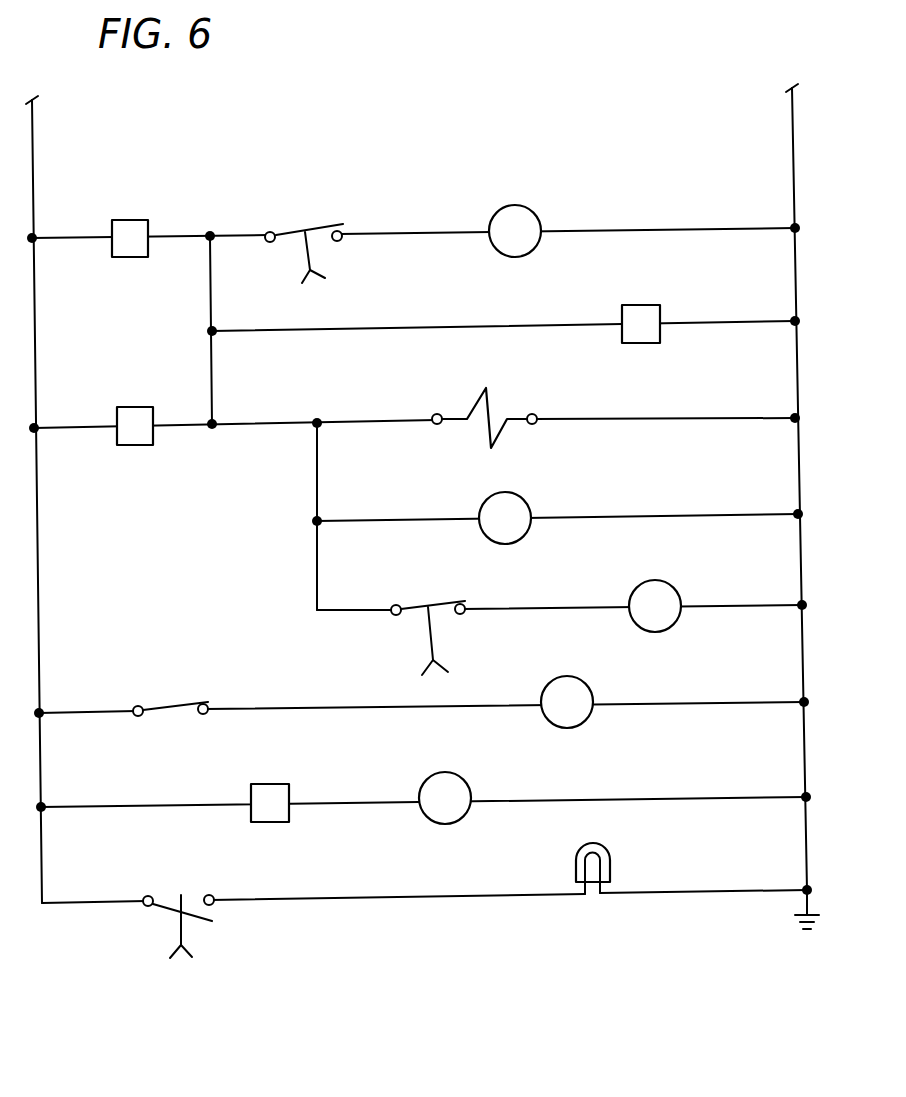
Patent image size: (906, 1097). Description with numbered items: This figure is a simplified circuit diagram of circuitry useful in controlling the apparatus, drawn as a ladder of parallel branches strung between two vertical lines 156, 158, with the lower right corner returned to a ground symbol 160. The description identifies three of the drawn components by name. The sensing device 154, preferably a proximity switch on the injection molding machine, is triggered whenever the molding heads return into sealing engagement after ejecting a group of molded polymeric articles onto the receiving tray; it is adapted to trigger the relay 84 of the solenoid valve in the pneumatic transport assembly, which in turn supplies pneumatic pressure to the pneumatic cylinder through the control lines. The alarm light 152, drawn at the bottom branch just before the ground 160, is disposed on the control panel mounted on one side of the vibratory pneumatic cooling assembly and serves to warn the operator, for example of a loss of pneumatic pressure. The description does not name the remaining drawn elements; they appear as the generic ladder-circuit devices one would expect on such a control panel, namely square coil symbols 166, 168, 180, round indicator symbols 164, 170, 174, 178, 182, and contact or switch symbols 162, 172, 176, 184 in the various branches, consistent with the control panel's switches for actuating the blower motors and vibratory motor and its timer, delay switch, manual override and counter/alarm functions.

The first power supply line 156 is at (33, 128).
The second power supply line 158 is at (792, 160).
The sensing device 154 is at (133, 224).
The switch 162 is at (290, 235).
The indicator lamp 164 is at (532, 210).
The relay coil 166 is at (656, 312).
The relay coil 168 is at (118, 410).
The relay 84 is at (489, 400).
The indicator lamp 170 is at (527, 505).
The switch 172 is at (410, 605).
The indicator lamp 174 is at (672, 596).
The switch 176 is at (153, 708).
The indicator lamp 178 is at (548, 680).
The relay coil 180 is at (252, 790).
The indicator lamp 182 is at (425, 780).
The switch 184 is at (165, 910).
The alarm light 152 is at (610, 862).
The ground 160 is at (805, 898).